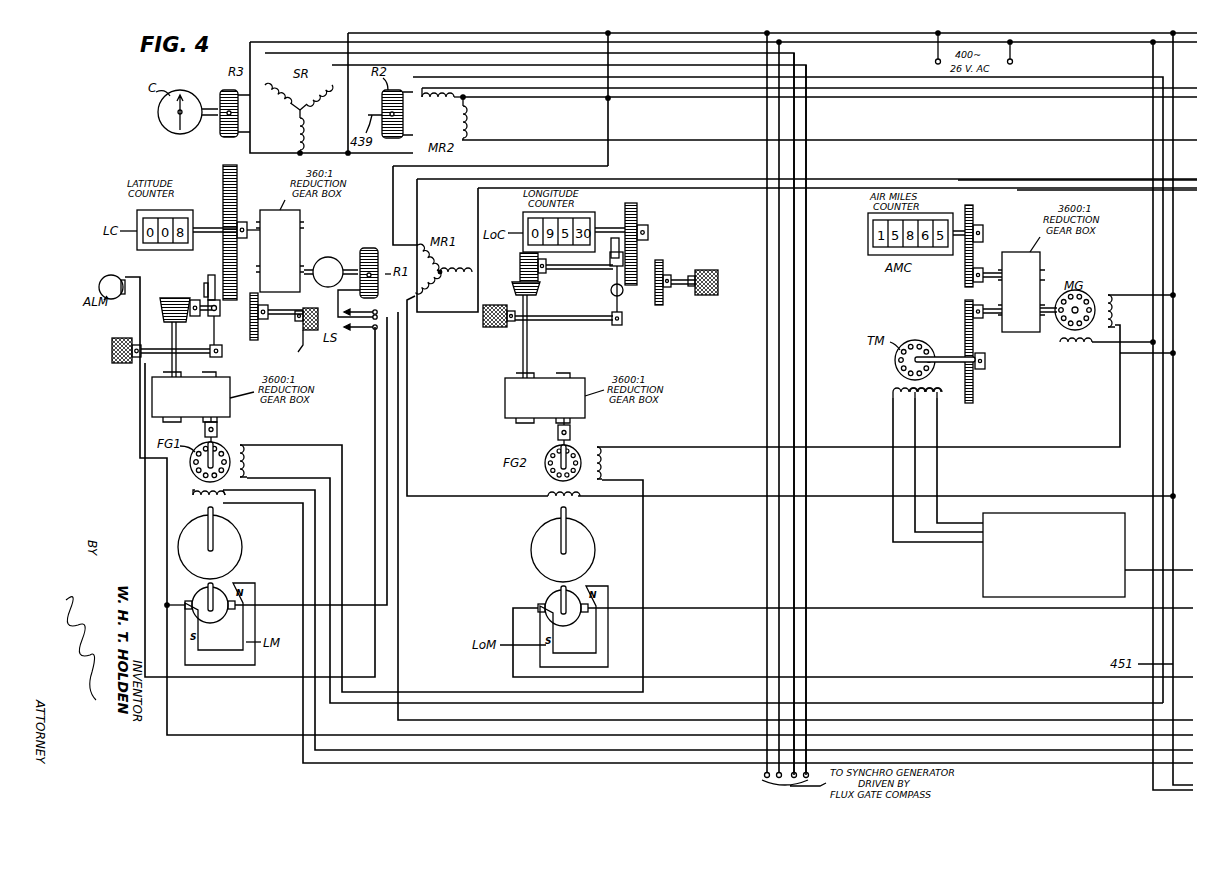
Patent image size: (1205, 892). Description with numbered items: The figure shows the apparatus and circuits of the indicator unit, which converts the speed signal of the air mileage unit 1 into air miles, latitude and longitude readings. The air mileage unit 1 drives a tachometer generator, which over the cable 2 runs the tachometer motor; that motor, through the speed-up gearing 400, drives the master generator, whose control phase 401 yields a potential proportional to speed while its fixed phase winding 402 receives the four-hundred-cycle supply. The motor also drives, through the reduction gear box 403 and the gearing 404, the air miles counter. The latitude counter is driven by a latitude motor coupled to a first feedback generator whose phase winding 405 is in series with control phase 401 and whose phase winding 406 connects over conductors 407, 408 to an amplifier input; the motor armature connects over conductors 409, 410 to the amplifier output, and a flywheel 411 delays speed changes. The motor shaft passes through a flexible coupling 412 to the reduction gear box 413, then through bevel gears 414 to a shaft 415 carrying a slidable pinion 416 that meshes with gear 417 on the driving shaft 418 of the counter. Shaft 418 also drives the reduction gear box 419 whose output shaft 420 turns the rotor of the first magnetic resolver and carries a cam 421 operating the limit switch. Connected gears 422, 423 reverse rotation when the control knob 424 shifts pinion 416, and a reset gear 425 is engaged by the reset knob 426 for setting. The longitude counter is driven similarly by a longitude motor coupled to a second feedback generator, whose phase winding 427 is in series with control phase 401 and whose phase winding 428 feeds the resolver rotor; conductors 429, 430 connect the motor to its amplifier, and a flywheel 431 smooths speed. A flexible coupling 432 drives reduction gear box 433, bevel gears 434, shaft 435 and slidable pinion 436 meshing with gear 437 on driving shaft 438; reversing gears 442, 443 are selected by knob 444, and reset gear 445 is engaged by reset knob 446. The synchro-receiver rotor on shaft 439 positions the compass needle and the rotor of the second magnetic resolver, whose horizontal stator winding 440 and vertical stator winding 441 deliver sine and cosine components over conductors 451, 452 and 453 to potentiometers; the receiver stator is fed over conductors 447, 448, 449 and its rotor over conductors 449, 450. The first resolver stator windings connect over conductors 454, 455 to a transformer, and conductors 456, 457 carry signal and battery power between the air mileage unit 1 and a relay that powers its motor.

The air mileage unit 1 is at (983, 586).
The cable 2 is at (1002, 519).
The gearing 400 is at (965, 330).
The control phase 401 is at (1112, 313).
The fixed phase winding 402 is at (1083, 350).
The reduction gear box 403 is at (1012, 334).
The gearing 404 is at (983, 240).
The phase winding 405 is at (247, 460).
The phase winding 406 is at (200, 492).
The conductor 407 is at (1056, 765).
The conductor 408 is at (1100, 752).
The conductor 409 is at (926, 703).
The conductor 410 is at (990, 722).
The flywheel 411 is at (235, 548).
The flexible coupling 412 is at (217, 429).
The reduction gear box 413 is at (224, 382).
The bevel gears 414 is at (173, 296).
The shaft 415 is at (200, 325).
The pinion 416 is at (224, 330).
The gear 417 is at (223, 172).
The driving shaft 418 is at (211, 226).
The reduction gear box 419 is at (302, 226).
The output shaft 420 is at (321, 259).
The cam 421 is at (370, 248).
The gear 422 is at (214, 275).
The reversing gear 423 is at (204, 288).
The control knob 424 is at (112, 350).
The reset gear 425 is at (258, 336).
The reset knob 426 is at (307, 348).
The phase winding 427 is at (603, 463).
The phase winding 428 is at (550, 496).
The conductor 429 is at (851, 677).
The conductor 430 is at (857, 610).
The flywheel 431 is at (531, 548).
The flexible coupling 432 is at (570, 432).
The reduction gear box 433 is at (545, 373).
The bevel gears 434 is at (520, 270).
The shaft 435 is at (560, 282).
The pinion 436 is at (633, 318).
The gear 437 is at (637, 208).
The driving shaft 438 is at (614, 216).
The shaft 439 is at (218, 95).
The horizontal stator winding 440 is at (440, 103).
The vertical stator winding 441 is at (467, 118).
The reversing gear 442 is at (608, 288).
The reversing gear 443 is at (607, 248).
The knob 444 is at (483, 333).
The reset gear 445 is at (664, 309).
The reset knob 446 is at (716, 272).
The conductor 447 is at (806, 518).
The conductor 448 is at (794, 541).
The conductor 449 is at (779, 562).
The conductor 450 is at (767, 583).
The conductor 451 is at (851, 36).
The conductor 452 is at (853, 90).
The conductor 453 is at (855, 142).
The conductor 454 is at (958, 180).
The conductor 455 is at (1017, 190).
The conductor 456 is at (1125, 580).
The conductor 457 is at (1125, 590).